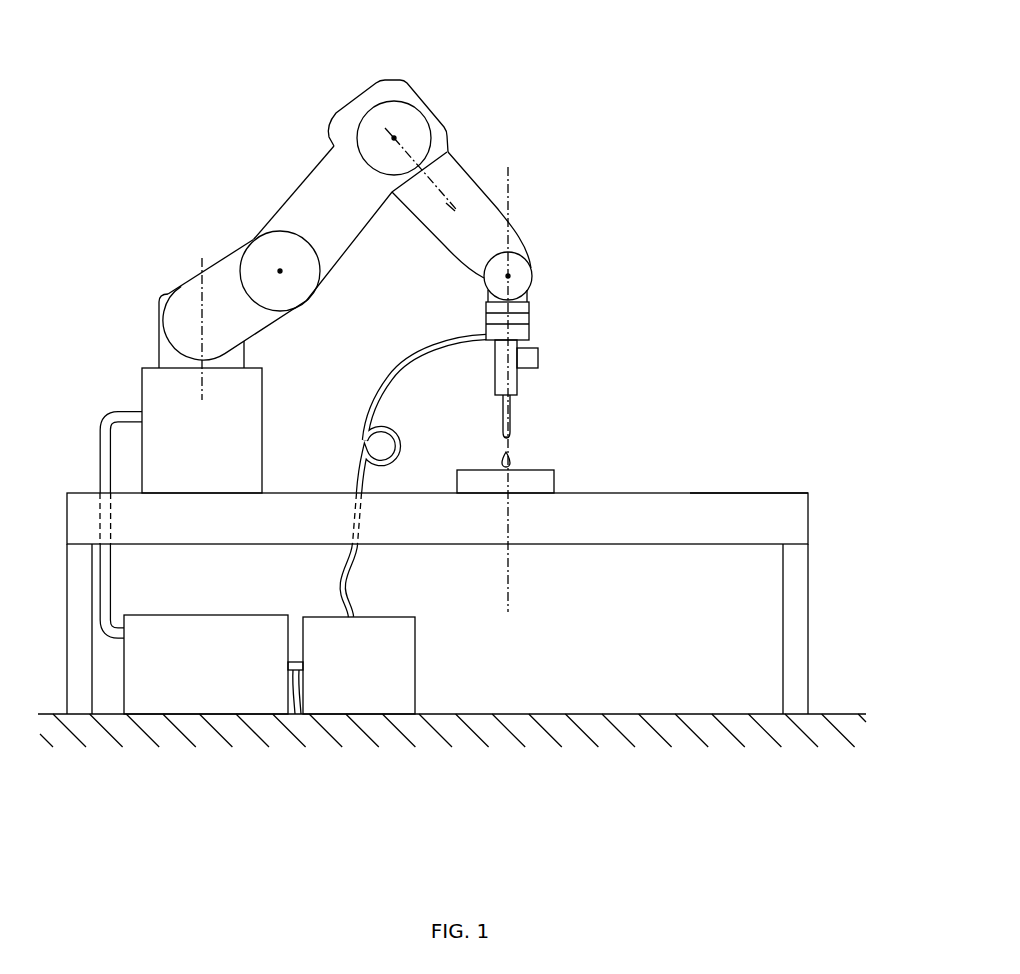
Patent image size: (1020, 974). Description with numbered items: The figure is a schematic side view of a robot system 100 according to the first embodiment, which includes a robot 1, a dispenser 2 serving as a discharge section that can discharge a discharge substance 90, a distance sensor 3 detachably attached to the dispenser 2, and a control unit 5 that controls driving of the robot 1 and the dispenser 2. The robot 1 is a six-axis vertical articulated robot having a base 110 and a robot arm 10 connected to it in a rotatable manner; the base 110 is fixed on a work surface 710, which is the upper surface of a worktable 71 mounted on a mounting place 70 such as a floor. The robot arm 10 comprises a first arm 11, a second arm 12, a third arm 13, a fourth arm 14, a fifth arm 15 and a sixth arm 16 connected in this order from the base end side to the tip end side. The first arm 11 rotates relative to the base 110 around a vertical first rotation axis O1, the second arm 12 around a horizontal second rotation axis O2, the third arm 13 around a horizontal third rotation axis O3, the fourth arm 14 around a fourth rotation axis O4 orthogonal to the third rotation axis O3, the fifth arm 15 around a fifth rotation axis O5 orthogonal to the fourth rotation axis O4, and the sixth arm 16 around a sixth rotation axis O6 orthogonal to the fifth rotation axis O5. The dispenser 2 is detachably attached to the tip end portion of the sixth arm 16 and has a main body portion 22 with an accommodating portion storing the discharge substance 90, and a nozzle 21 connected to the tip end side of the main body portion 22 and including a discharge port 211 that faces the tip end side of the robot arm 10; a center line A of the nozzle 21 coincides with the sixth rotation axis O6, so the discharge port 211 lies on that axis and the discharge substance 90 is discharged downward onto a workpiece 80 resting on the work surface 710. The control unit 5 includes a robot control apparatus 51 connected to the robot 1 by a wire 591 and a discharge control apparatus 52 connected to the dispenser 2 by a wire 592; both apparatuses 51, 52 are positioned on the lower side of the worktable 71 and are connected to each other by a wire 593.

The robot system 100 is at (530, 72).
The robot 1 is at (499, 160).
The robot arm 10 is at (421, 85).
The base 110 is at (150, 383).
The first arm 11 is at (224, 280).
The second arm 12 is at (312, 188).
The third arm 13 is at (388, 85).
The fourth arm 14 is at (488, 232).
The fifth arm 15 is at (519, 298).
The sixth arm 16 is at (521, 317).
The first rotation axis O1 is at (200, 318).
The second rotation axis O2 is at (281, 273).
The third rotation axis O3 is at (394, 138).
The fourth rotation axis O4 is at (445, 205).
The fifth rotation axis O5 is at (486, 278).
The sixth rotation axis O6 is at (486, 300).
The dispenser 2 is at (537, 330).
The main body portion 22 is at (499, 374).
The nozzle 21 is at (503, 423).
The discharge port 211 is at (517, 437).
The distance sensor 3 is at (547, 355).
The discharge substance 90 is at (512, 456).
The workpiece 80 is at (552, 468).
The center line A is at (533, 389).
The mounting place 70 is at (836, 713).
The worktable 71 is at (818, 513).
The work surface 710 is at (748, 494).
The control unit 5 is at (305, 668).
The robot control apparatus 51 is at (226, 610).
The discharge control apparatus 52 is at (393, 614).
The wire 591 is at (108, 573).
The wire 592 is at (349, 568).
The wire 593 is at (297, 714).